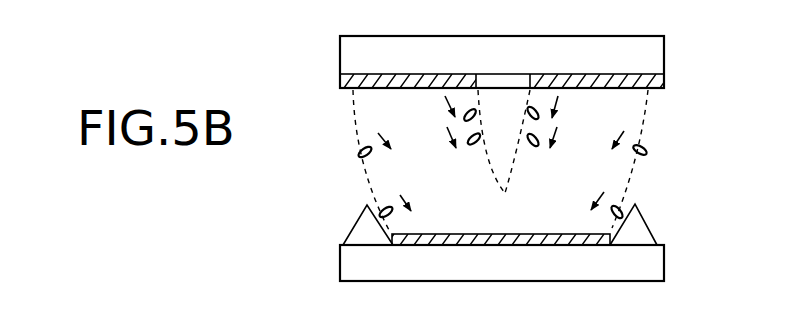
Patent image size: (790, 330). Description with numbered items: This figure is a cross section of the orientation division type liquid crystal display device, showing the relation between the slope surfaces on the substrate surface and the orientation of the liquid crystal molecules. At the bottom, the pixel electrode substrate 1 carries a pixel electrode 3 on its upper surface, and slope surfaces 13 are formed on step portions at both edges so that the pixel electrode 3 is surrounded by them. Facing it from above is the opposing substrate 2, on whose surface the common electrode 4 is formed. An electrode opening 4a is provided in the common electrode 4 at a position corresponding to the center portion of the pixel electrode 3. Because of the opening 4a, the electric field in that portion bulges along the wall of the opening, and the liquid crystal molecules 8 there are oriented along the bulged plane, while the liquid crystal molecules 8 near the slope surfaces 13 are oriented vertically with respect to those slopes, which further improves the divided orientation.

The pixel electrode substrate 1 is at (650, 260).
The opposing substrate 2 is at (650, 51).
The pixel electrode 3 is at (420, 245).
The common electrode 4 is at (655, 80).
The electrode opening 4a is at (505, 80).
The liquid crystal molecules 8 is at (648, 152).
The slope surfaces 13 is at (346, 225).